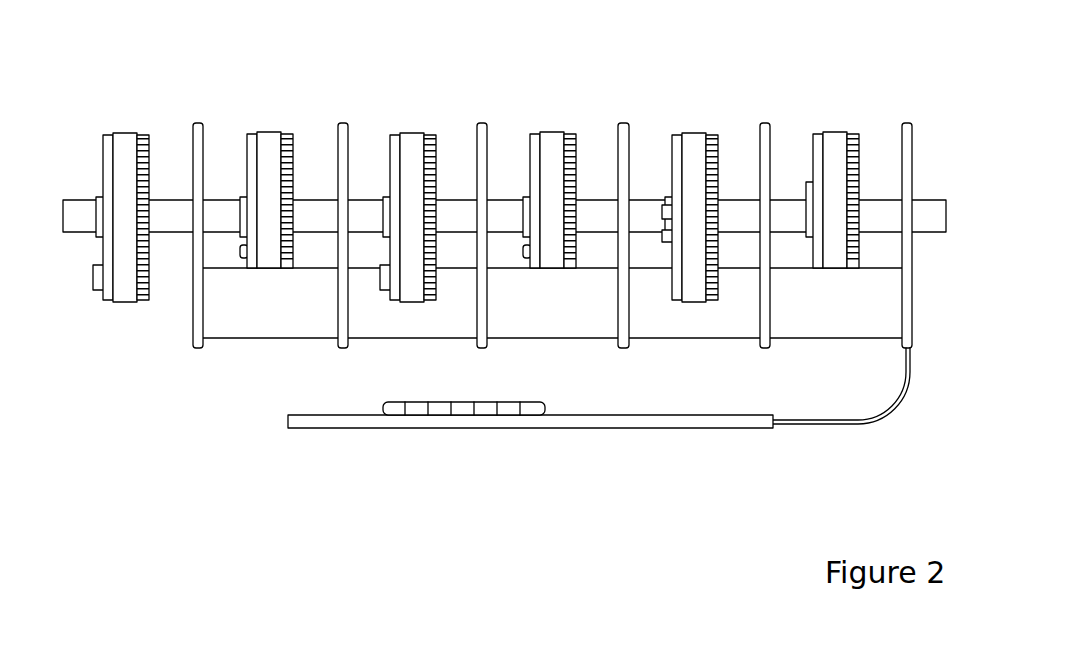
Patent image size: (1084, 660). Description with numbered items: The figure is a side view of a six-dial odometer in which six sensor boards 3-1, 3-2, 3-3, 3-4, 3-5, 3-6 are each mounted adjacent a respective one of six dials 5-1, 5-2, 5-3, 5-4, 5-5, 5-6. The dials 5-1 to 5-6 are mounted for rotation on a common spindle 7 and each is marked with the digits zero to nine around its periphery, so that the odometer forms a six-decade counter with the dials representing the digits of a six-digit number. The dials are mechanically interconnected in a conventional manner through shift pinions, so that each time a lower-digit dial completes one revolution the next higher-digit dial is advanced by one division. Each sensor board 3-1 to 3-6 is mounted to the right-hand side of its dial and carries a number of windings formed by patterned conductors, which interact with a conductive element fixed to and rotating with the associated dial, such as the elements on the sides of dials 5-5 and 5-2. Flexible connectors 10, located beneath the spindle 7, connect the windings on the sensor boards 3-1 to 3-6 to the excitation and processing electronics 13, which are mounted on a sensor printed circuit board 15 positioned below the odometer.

The sensor board 3-1 is at (907, 123).
The sensor board 3-2 is at (765, 123).
The sensor board 3-3 is at (624, 123).
The sensor board 3-4 is at (481, 123).
The sensor board 3-5 is at (341, 123).
The sensor board 3-6 is at (196, 123).
The dial 5-1 is at (833, 132).
The dial 5-2 is at (692, 133).
The dial 5-3 is at (549, 132).
The dial 5-4 is at (410, 133).
The dial 5-5 is at (269, 132).
The dial 5-6 is at (126, 133).
The spindle 7 is at (944, 210).
The flexible connector 10 is at (270, 315).
The excitation and processing electronics 13 is at (470, 406).
The sensor printed circuit board 15 is at (617, 437).